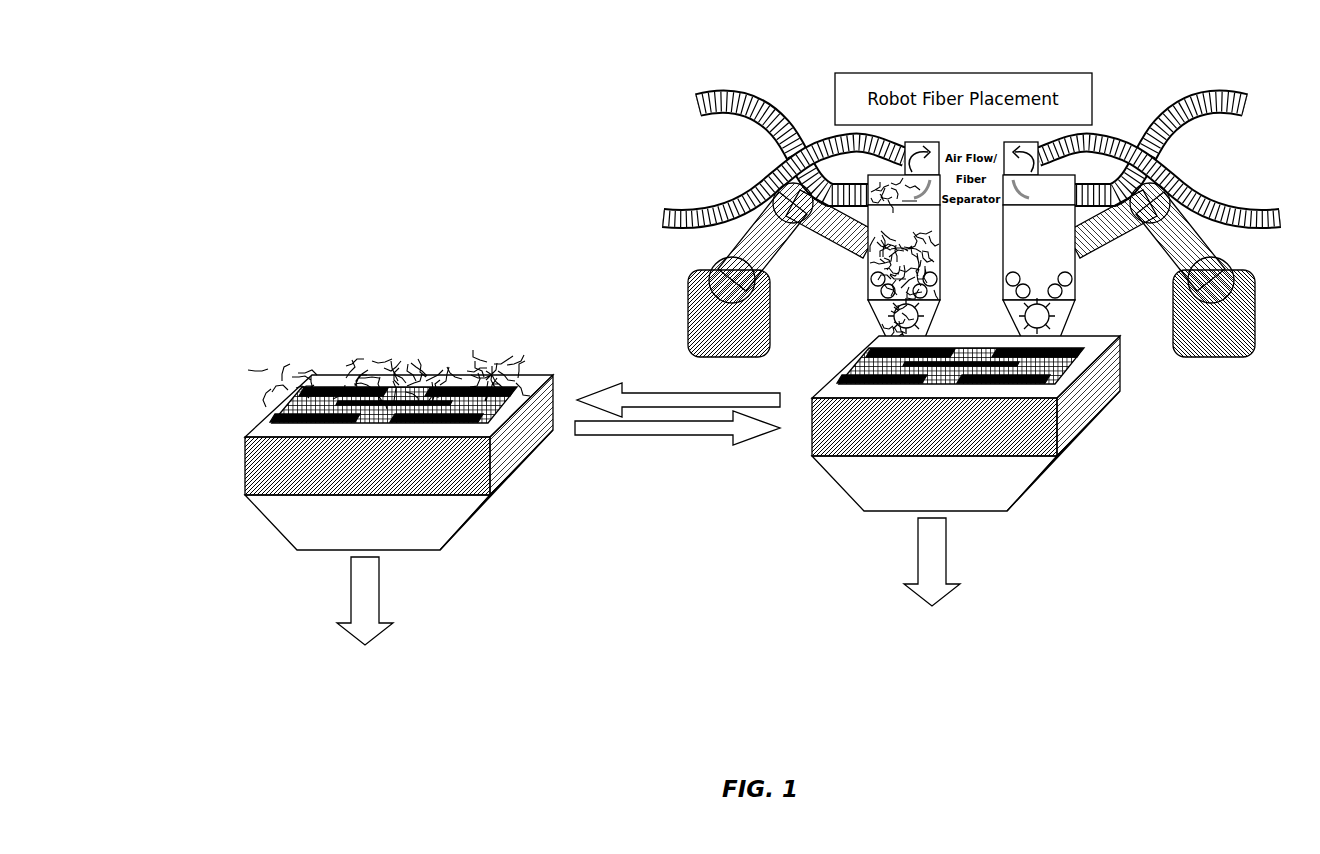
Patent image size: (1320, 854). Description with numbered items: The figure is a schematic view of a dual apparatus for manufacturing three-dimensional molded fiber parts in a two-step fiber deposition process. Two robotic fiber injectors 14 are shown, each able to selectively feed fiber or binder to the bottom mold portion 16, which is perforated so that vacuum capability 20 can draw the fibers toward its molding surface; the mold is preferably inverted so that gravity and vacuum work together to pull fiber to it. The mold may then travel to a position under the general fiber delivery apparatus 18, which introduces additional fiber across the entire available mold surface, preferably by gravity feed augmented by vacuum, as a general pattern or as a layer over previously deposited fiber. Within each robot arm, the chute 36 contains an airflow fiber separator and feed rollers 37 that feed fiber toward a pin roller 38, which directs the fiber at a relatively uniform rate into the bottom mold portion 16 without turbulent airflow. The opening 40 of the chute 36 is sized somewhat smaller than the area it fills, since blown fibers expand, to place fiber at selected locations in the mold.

The robotic fiber injector 14 is at (1085, 268).
The bottom mold portion 16 is at (226, 470).
The general fiber delivery apparatus 18 is at (457, 322).
The vacuum capability 20 is at (432, 536).
The chute 36 is at (1017, 232).
The airflow fiber separator and feed rollers 37 is at (871, 277).
The pin roller 38 is at (1062, 317).
The opening 40 is at (1034, 344).